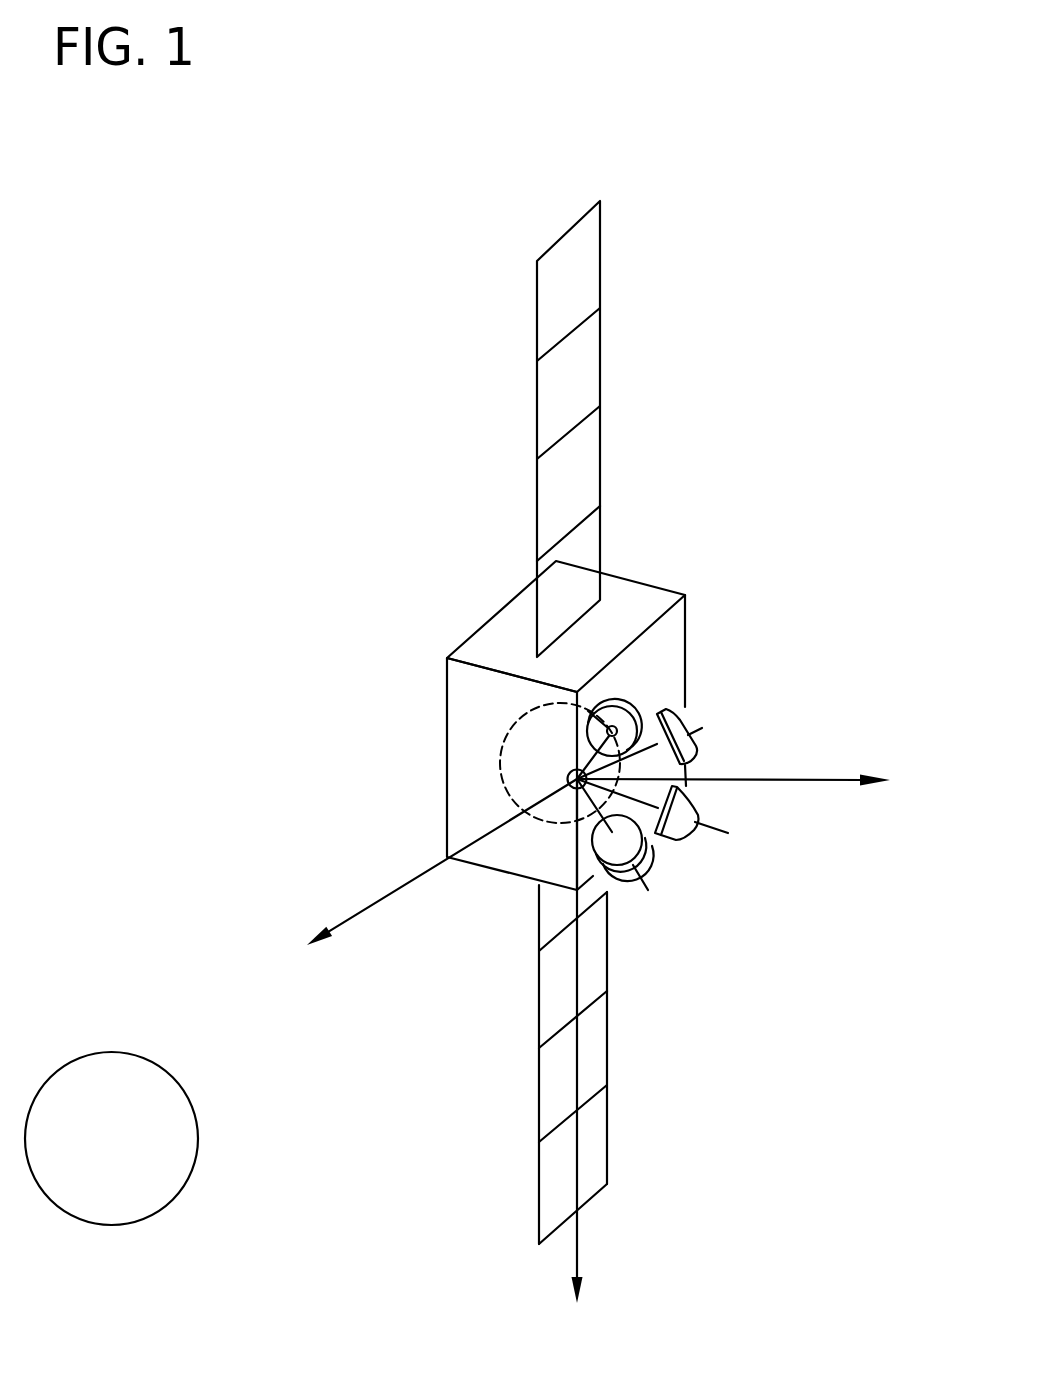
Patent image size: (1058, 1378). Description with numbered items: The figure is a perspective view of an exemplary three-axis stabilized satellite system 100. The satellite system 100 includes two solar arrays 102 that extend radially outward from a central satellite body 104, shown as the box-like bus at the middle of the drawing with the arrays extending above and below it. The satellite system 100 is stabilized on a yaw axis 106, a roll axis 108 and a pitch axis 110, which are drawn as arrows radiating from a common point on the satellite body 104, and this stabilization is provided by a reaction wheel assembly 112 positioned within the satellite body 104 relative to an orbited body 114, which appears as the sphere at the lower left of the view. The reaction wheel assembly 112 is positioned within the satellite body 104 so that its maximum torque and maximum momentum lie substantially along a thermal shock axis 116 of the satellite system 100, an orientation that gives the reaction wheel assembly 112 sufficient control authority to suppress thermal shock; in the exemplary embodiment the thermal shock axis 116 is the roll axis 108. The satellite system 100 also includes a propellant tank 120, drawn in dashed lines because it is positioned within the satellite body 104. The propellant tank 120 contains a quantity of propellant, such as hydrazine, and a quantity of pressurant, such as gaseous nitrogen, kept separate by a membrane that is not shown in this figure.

The satellite system 100 is at (252, 329).
The solar arrays 102 is at (564, 297).
The satellite body 104 is at (641, 583).
The yaw axis 106 is at (360, 912).
The roll axis 108 is at (800, 780).
The pitch axis 110 is at (583, 1246).
The reaction wheel assembly 112 is at (678, 877).
The orbited body 114 is at (120, 1226).
The thermal shock axis 116 is at (733, 780).
The propellant tank 120 is at (500, 752).